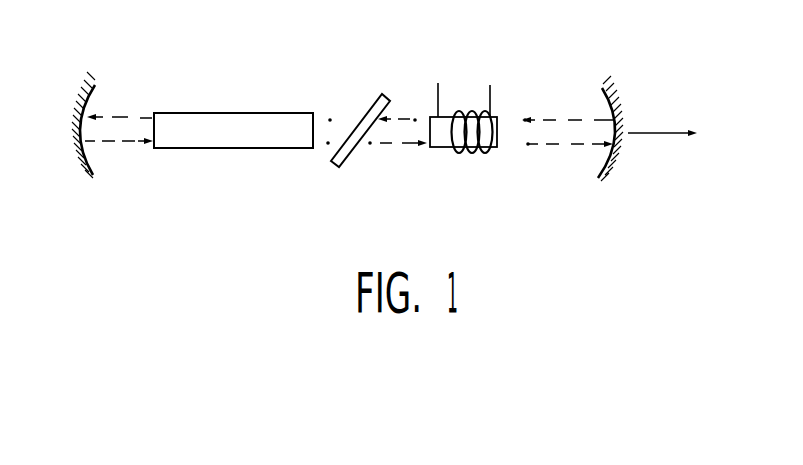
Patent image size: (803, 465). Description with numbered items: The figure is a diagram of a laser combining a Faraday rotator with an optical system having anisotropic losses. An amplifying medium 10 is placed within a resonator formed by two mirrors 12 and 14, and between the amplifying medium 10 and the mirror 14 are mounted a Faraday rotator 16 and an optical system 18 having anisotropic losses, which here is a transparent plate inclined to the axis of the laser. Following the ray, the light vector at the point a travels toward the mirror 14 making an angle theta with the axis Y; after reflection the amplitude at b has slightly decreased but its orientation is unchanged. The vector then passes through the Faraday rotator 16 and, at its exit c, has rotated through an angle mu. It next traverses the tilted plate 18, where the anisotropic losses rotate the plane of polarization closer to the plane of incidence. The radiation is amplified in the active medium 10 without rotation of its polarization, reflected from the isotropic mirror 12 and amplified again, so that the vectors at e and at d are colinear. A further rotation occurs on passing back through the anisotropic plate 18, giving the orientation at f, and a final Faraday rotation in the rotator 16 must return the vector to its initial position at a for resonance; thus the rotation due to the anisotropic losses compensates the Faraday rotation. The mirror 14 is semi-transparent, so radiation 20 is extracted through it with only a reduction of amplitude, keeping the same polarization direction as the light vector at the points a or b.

The amplifying medium 10 is at (202, 127).
The mirror 12 is at (93, 85).
The mirror 14 is at (615, 102).
The Faraday rotator 16 is at (466, 100).
The optical system having anisotropic losses 18 is at (379, 97).
The radiation 20 is at (673, 135).
The point a is at (528, 145).
The point b is at (525, 120).
The point c is at (415, 120).
The point d is at (330, 120).
The point e is at (328, 143).
The point f is at (370, 143).